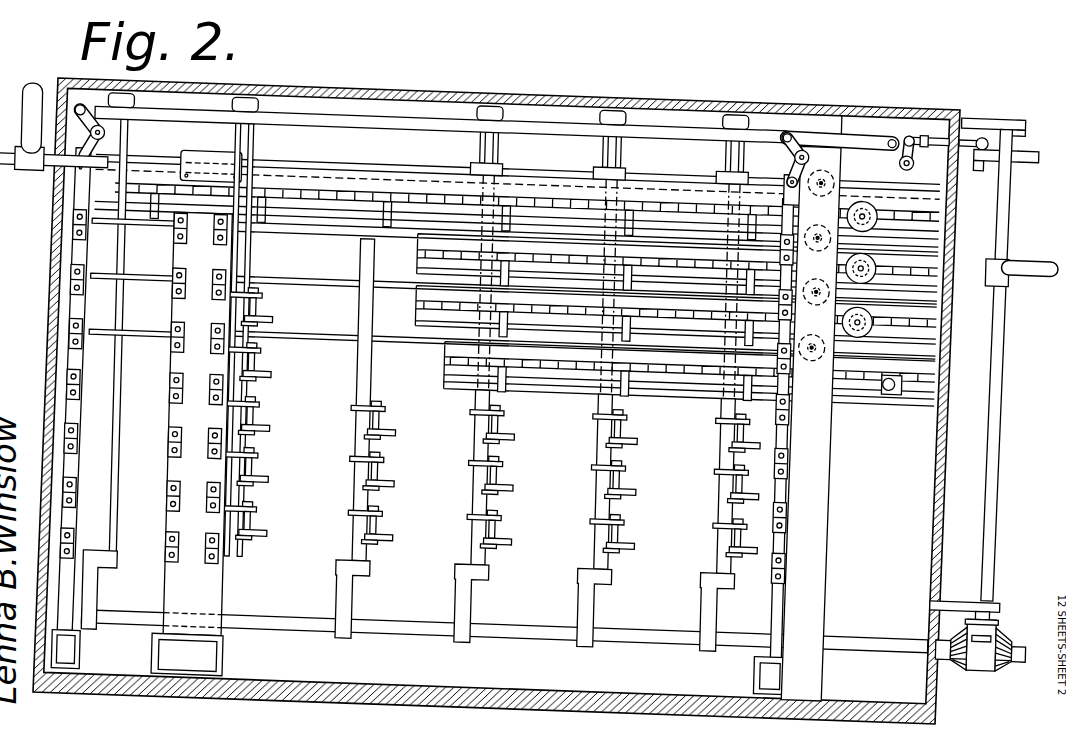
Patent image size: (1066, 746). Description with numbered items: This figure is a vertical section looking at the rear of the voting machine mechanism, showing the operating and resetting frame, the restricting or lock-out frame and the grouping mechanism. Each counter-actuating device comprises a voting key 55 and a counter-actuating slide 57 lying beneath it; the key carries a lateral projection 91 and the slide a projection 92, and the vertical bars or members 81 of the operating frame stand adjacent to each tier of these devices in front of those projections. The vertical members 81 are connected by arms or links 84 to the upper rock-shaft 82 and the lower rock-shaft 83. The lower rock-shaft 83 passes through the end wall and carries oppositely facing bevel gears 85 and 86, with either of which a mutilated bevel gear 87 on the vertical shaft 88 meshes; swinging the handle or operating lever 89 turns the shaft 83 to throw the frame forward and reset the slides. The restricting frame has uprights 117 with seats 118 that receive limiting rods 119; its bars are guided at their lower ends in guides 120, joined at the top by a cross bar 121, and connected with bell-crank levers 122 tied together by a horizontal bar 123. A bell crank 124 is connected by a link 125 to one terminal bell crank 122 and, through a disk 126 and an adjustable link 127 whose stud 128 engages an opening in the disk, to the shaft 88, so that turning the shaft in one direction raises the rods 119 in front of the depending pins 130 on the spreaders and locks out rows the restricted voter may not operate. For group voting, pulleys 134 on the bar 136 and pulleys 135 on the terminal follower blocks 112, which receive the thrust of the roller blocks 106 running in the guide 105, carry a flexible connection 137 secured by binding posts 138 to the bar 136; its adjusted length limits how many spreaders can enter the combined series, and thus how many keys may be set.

The voting key 55 is at (495, 417).
The counter-actuating slide 57 is at (501, 430).
The vertical bars or members 81 is at (550, 306).
The rock-shaft 82 is at (0, 92).
The rock-shaft 83 is at (349, 538).
The arms or links 84 is at (272, 155).
The bevel gear 85 is at (980, 667).
The bevel gear 86 is at (947, 619).
The mutilated bevel gear 87 is at (997, 622).
The vertical shaft 88 is at (1014, 365).
The handle or operating lever 89 is at (1018, 285).
The projections 91 is at (550, 368).
The projections 92 is at (553, 398).
The rail 105 is at (517, 181).
The blocks 106 is at (527, 185).
The terminal follower or slide 112 is at (883, 258).
The uprights 117 is at (22, 171).
The seats 118 is at (169, 254).
The limiting rods 119 is at (578, 326).
The guides 120 is at (464, 664).
The cross bar 121 is at (518, 164).
The bell-crank levers 122 is at (421, 121).
The horizontal bar 123 is at (441, 97).
The bell crank 124 is at (937, 123).
The link 125 is at (844, 110).
The disk 126 is at (1011, 143).
The link 127 is at (995, 108).
The stud or projection 128 is at (980, 181).
The depending pins 130 is at (133, 277).
The pulleys 134 is at (852, 289).
The pulleys 135 is at (861, 269).
The bar 136 is at (766, 433).
The flexible connection 137 is at (854, 293).
The binding posts 138 is at (790, 367).